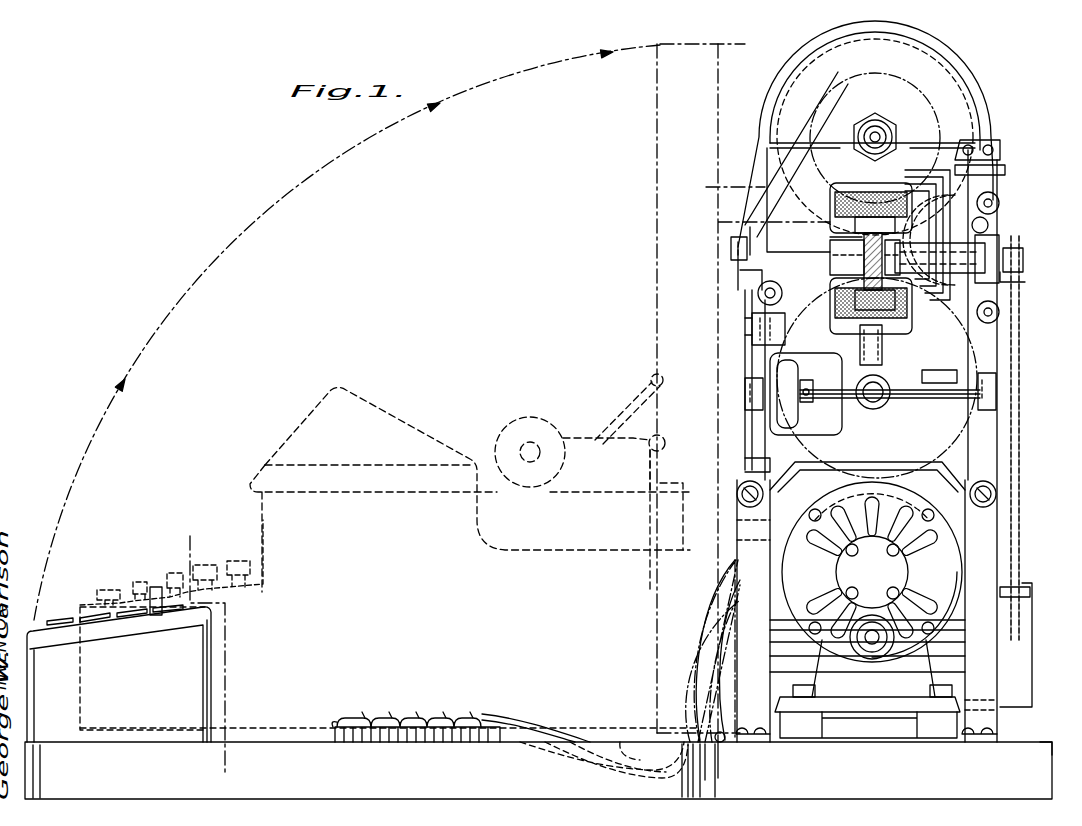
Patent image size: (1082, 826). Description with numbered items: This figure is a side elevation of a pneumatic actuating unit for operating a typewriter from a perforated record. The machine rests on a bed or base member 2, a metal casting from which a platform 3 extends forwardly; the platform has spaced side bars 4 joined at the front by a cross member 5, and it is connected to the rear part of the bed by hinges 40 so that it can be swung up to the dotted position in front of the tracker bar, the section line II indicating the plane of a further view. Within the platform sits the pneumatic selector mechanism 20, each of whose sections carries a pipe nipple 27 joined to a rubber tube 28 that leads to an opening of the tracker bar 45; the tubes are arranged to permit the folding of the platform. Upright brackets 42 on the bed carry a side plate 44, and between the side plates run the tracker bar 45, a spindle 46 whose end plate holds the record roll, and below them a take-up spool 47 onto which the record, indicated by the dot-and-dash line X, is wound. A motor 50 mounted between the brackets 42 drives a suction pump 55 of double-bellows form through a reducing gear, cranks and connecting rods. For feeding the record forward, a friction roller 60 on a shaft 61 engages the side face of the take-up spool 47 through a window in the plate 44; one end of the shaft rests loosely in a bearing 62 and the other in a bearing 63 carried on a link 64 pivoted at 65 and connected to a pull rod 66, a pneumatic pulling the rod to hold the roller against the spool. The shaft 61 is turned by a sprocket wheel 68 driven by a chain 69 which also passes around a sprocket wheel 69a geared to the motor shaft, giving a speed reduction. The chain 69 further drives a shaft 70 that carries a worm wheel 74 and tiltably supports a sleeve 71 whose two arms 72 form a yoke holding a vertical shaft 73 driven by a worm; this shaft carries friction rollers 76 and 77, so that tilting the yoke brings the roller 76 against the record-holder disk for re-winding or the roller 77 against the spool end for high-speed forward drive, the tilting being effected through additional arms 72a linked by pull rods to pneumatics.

The bed or base member 2 is at (1050, 742).
The platform 3 is at (657, 103).
The side bars 4 is at (288, 742).
The cross member 5 is at (28, 778).
The section line II is at (201, 656).
The pneumatic selector mechanism 20 is at (408, 712).
The pipe nipple 27 is at (333, 727).
The rubber hose or tube 28 is at (356, 718).
The hinges 40 is at (722, 743).
The upright brackets 42 is at (866, 451).
The side plate 44 is at (877, 378).
The tracker bar 45 is at (731, 258).
The spindle 46 is at (876, 130).
The take-up spool 47 is at (820, 485).
The motor 50 is at (872, 572).
The suction pump 55 is at (955, 660).
The friction roller 60 is at (790, 418).
The shaft 61 is at (915, 392).
The bearing 62 is at (980, 408).
The bearing 63 is at (745, 400).
The link 64 is at (745, 352).
The pivot 65 is at (752, 330).
The pull rod 66 is at (755, 470).
The sprocket wheel 68 is at (1010, 392).
The chain 69 is at (1020, 495).
The sprocket wheel 69a is at (1022, 583).
The shaft 70 is at (830, 262).
The sleeve 71 is at (965, 265).
The arms 72 is at (925, 175).
The additional arms 72a is at (999, 203).
The vertical shaft 73 is at (860, 368).
The worm wheel 74 is at (862, 244).
The friction roller 76 is at (833, 198).
The friction roller 77 is at (833, 316).
The perforated paper record X is at (718, 187).